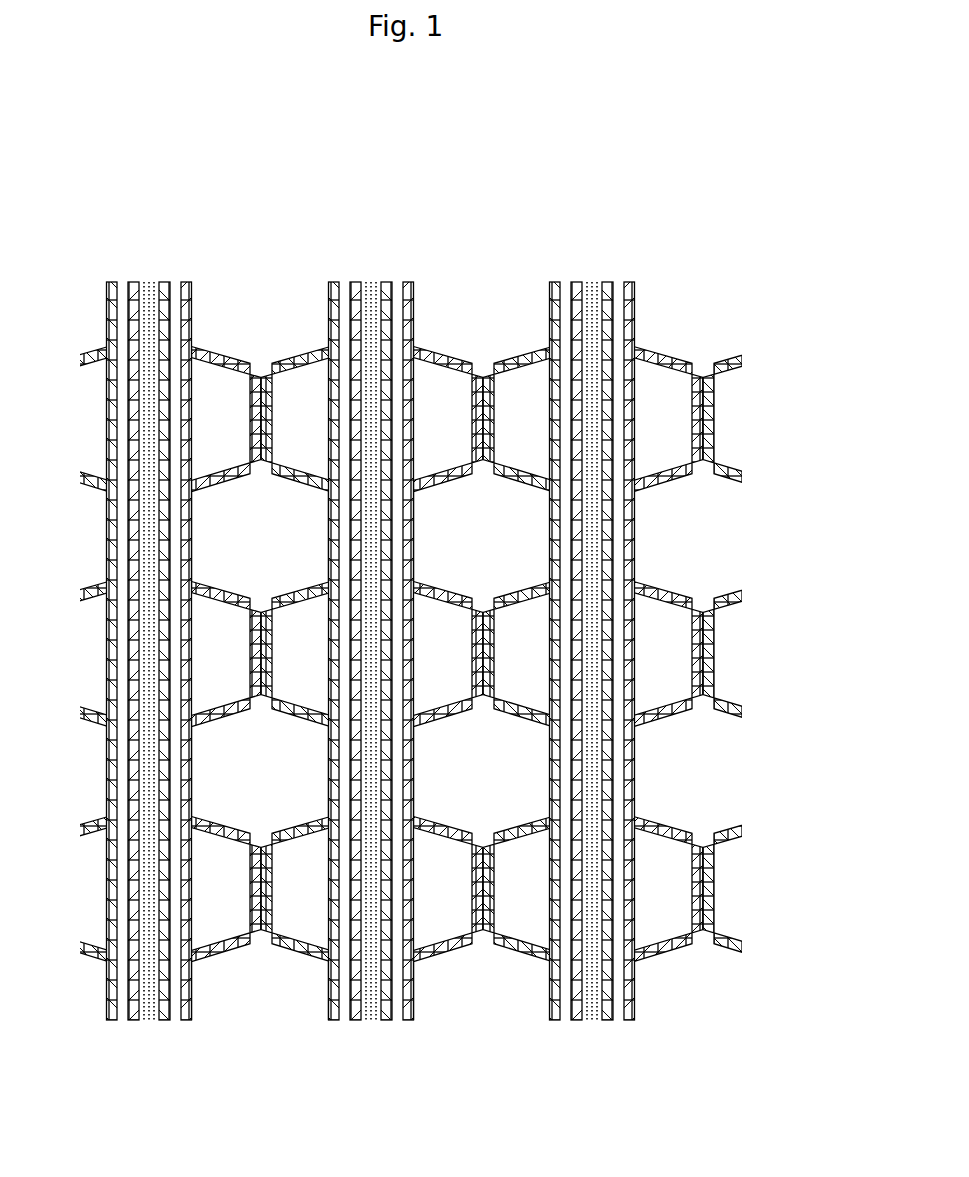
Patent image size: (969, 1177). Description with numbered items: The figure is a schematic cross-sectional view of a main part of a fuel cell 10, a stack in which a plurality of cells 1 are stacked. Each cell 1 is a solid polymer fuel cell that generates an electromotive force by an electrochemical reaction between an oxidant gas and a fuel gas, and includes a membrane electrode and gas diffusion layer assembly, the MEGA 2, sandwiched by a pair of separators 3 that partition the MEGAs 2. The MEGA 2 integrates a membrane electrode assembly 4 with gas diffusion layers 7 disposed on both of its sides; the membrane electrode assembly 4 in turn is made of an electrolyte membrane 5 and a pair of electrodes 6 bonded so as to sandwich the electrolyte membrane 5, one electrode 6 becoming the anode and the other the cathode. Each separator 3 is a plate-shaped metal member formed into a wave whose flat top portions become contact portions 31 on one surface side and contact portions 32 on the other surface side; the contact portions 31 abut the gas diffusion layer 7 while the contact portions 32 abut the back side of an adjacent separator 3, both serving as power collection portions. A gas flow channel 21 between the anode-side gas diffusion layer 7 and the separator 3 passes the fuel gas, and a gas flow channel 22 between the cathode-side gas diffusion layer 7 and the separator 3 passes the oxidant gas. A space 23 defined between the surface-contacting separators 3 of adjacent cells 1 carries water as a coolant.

The fuel cell 10 is at (723, 169).
The cell 1 is at (222, 177).
The membrane electrode and gas diffusion layer assembly (MEGA) 2 is at (200, 210).
The separator 3 is at (88, 347).
The membrane electrode assembly 4 is at (180, 238).
The electrolyte membrane 5 is at (148, 283).
The electrode 6 is at (134, 283).
The gas diffusion layer 7 is at (121, 283).
The gas flow channel 21 is at (293, 431).
The gas flow channel 22 is at (201, 431).
The space 23 is at (247, 543).
The contact portion 31 is at (192, 563).
The contact portion 32 is at (250, 393).